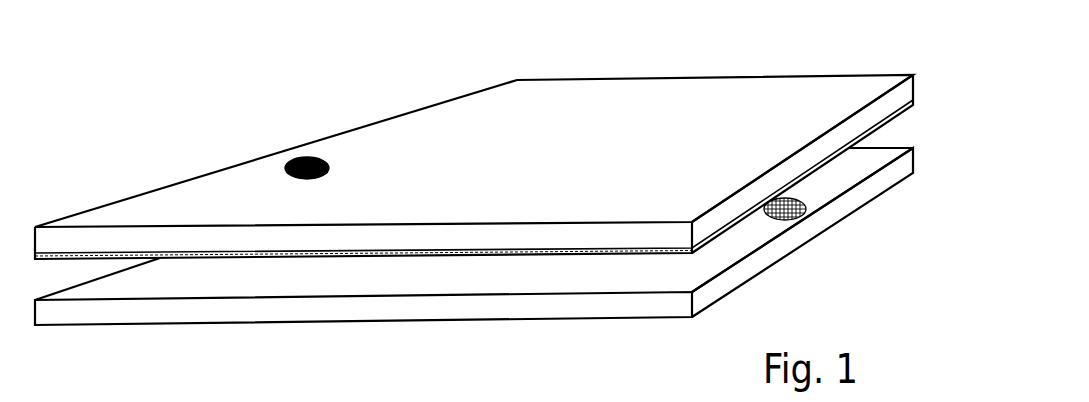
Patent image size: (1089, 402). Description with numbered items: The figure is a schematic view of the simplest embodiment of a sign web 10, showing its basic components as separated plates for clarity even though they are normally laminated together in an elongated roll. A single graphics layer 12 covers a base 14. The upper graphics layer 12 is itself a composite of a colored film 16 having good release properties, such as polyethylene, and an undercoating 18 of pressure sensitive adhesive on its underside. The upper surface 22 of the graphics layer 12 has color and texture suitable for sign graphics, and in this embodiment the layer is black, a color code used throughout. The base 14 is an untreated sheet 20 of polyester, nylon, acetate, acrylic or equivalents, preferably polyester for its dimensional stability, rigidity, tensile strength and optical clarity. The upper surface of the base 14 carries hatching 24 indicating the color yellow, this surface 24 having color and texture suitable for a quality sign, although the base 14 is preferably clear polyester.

The sign web 10 is at (551, 182).
The graphics layer 12 is at (509, 145).
The base 14 is at (508, 224).
The colored film 16 is at (914, 84).
The undercoating of pressure sensitive adhesive 18 is at (915, 103).
The untreated sheet 20 is at (755, 265).
The upper surface of graphics layer 22 is at (290, 167).
The hatching / upper surface of base 24 is at (807, 203).